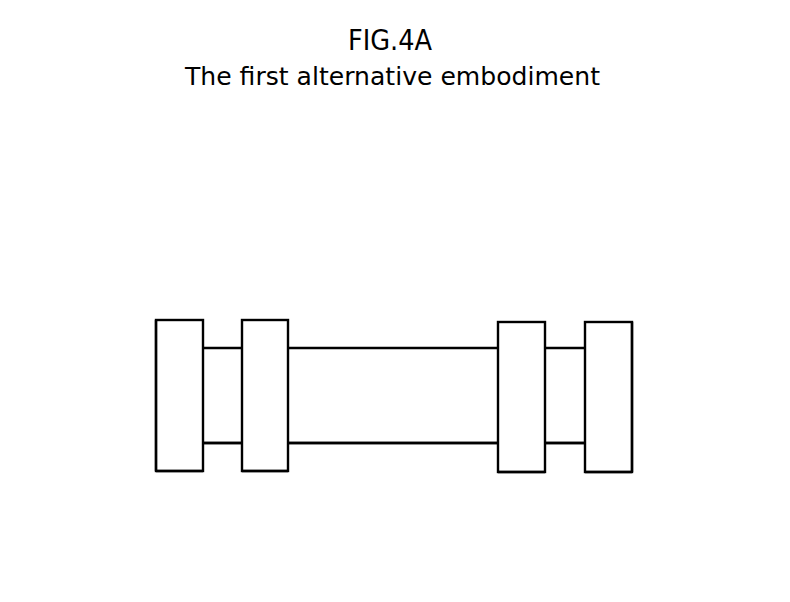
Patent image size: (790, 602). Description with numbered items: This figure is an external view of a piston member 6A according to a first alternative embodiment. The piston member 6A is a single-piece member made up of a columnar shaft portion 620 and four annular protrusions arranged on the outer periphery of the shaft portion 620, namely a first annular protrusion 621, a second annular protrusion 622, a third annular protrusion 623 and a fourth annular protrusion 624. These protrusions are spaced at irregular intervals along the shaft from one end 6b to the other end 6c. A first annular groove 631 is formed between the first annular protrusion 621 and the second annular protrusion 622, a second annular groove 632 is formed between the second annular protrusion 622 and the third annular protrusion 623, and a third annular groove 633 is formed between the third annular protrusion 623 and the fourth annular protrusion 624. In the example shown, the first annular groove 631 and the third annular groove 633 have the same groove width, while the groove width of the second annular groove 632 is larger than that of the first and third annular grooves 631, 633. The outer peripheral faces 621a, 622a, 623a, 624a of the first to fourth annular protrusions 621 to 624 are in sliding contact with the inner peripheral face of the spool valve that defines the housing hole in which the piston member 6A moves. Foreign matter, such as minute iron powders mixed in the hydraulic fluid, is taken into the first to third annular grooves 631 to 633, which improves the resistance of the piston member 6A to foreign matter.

The piston member 6A is at (371, 390).
The shaft portion 620 is at (372, 362).
The first annular protrusion 621 is at (180, 332).
The second annular protrusion 622 is at (268, 332).
The third annular protrusion 623 is at (520, 332).
The fourth annular protrusion 624 is at (607, 332).
The outer peripheral face 621a is at (170, 470).
The outer peripheral face 622a is at (268, 470).
The outer peripheral face 623a is at (527, 470).
The outer peripheral face 624a is at (617, 470).
The one end 6b is at (157, 395).
The other end 6c is at (632, 393).
The first annular groove 631 is at (217, 475).
The second annular groove 632 is at (392, 477).
The third annular groove 633 is at (572, 477).